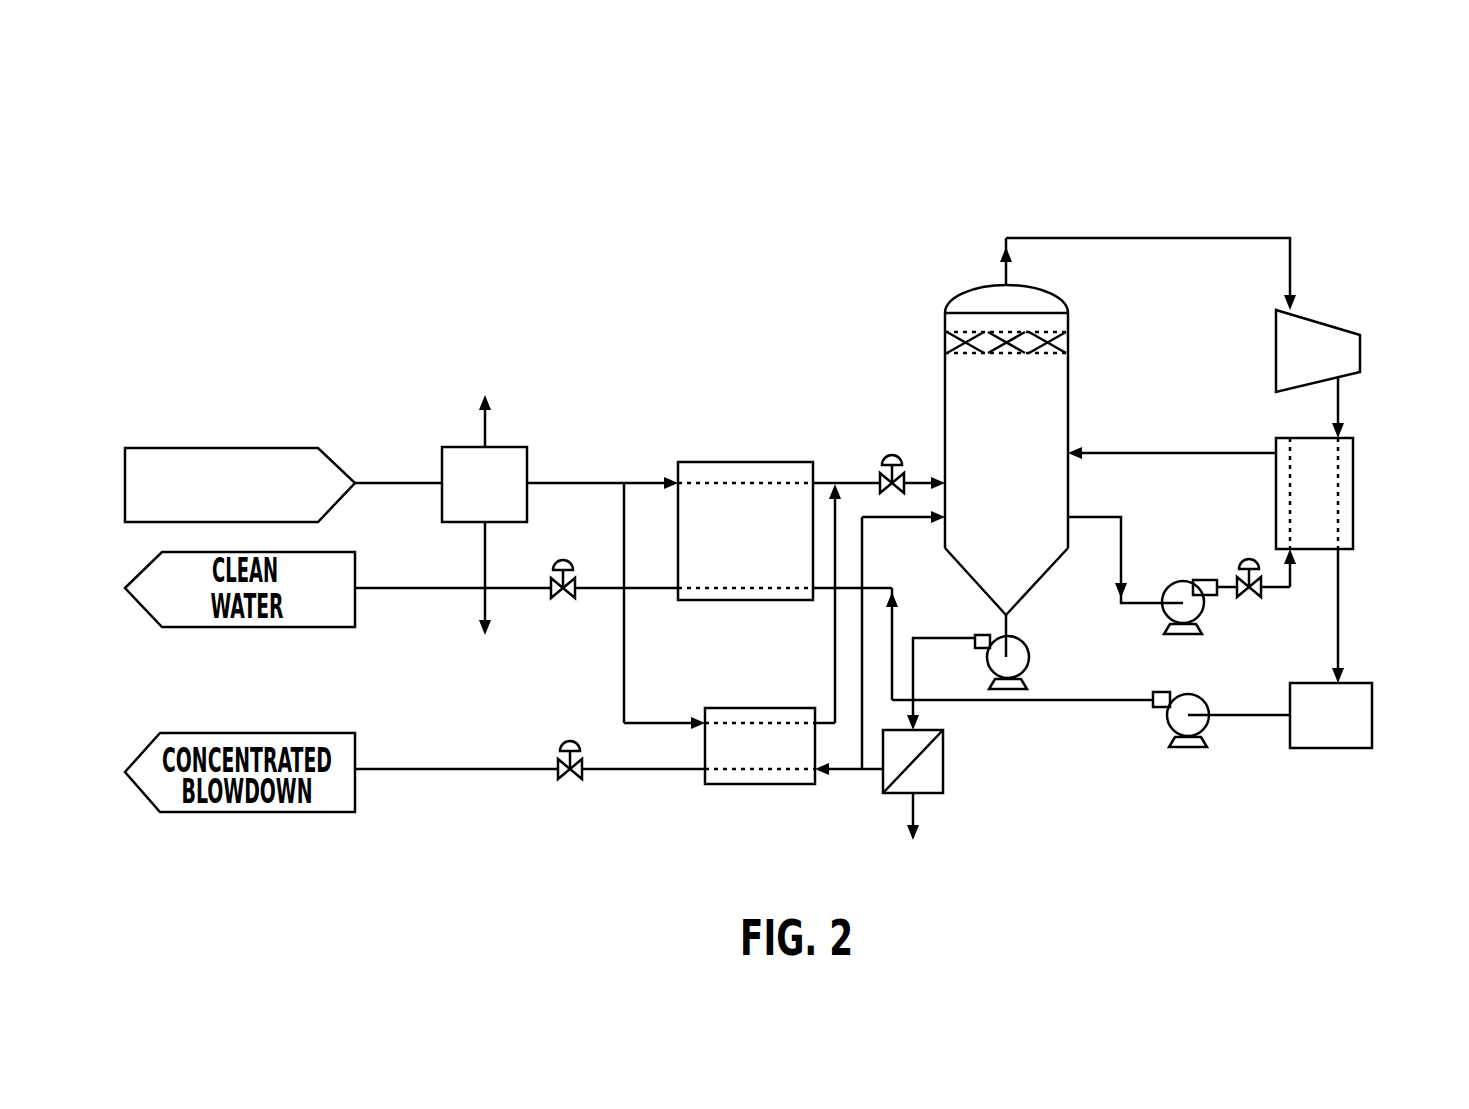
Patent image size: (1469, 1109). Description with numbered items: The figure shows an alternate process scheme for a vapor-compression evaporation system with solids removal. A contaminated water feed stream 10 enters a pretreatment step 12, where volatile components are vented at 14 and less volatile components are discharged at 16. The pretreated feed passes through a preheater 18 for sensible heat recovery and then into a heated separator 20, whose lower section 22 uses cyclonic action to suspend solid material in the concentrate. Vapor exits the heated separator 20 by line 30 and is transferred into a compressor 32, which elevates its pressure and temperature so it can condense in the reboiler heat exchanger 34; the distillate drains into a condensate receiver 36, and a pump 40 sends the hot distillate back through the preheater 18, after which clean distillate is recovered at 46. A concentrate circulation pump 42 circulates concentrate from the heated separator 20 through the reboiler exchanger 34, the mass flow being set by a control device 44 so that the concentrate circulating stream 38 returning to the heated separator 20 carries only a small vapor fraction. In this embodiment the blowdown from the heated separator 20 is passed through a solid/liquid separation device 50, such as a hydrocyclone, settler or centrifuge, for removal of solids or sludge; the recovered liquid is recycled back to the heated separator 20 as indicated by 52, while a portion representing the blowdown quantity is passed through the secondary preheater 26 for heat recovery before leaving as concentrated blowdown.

The contaminated water feed stream 10 is at (290, 447).
The pretreatment step 12 is at (510, 480).
The volatile components vent 14 is at (486, 437).
The less volatile components discharge 16 is at (487, 603).
The preheater 18 is at (745, 470).
The heated separator 20 is at (970, 443).
The lower section of heated separator 22 is at (1027, 575).
The secondary preheater 26 is at (752, 777).
The vapor line 30 is at (1160, 238).
The compressor 32 is at (1315, 350).
The reboiler heat exchanger 34 is at (1340, 497).
The condensate receiver 36 is at (1355, 710).
The concentrate circulating stream 38 is at (1195, 445).
The pump 40 is at (1195, 720).
The concentrate circulation pump 42 is at (1193, 604).
The control device 44 is at (1253, 565).
The recovered distillate 46 is at (400, 593).
The solid/liquid separation device 50 is at (943, 752).
The recycle of recovered liquid 52 is at (907, 520).